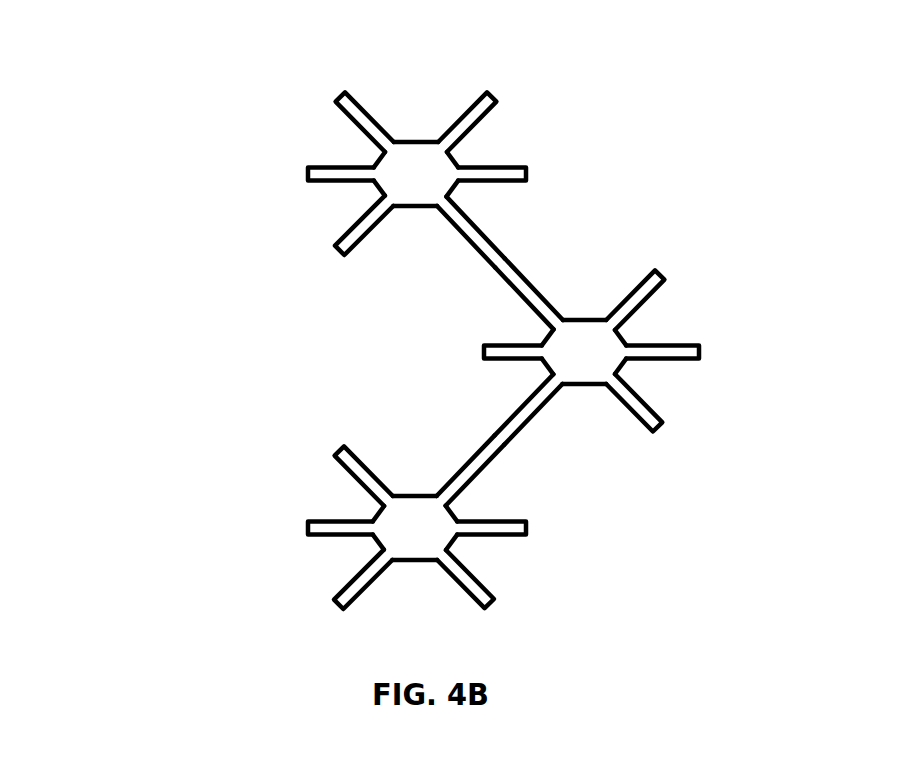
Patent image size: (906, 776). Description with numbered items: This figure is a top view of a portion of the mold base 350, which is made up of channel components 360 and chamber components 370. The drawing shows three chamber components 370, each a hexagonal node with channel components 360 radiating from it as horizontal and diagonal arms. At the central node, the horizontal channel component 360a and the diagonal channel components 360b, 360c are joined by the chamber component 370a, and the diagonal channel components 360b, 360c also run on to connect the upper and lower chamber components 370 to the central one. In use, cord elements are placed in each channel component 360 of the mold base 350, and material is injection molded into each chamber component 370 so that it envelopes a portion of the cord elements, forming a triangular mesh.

The mold base 350 is at (138, 105).
The chamber component 370 is at (393, 185).
The channel component 360 is at (347, 243).
The horizontal channel component 360a is at (683, 352).
The diagonal channel component 360b is at (525, 290).
The diagonal channel component 360c is at (517, 425).
The chamber component 370a is at (578, 350).